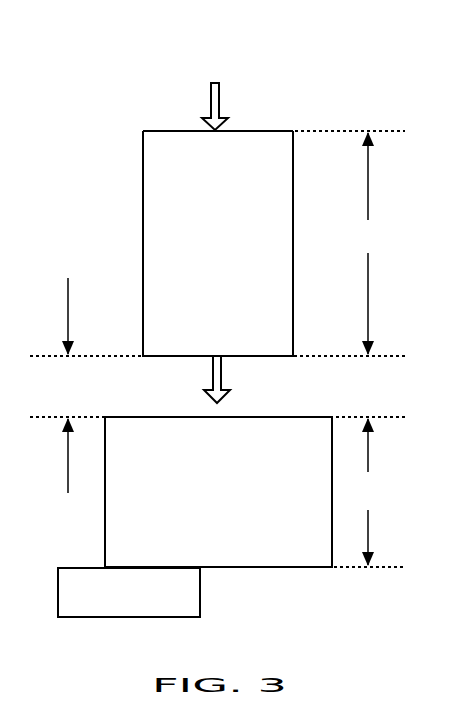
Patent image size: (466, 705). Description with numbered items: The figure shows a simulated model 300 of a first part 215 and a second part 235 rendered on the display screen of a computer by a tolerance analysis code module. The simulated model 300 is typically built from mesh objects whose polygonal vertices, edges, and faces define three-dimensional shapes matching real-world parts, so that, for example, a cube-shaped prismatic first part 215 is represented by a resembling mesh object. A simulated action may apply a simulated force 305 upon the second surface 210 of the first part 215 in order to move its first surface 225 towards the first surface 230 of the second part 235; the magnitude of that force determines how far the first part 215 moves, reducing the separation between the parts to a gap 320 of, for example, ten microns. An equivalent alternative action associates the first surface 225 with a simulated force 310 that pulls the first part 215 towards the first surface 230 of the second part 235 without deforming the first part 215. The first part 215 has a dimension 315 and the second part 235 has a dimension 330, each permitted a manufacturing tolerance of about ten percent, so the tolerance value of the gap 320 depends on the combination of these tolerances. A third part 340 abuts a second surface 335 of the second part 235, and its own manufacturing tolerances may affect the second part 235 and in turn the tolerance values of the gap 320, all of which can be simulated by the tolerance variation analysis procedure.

The simulated model 300 is at (377, 66).
The simulated force 305 is at (221, 112).
The second surface of the first part 210 is at (264, 127).
The first part 215 is at (233, 245).
The first surface of the first part 225 is at (232, 361).
The simulated force 310 is at (212, 368).
The dimension 315 is at (217, 243).
The gap 320 is at (69, 385).
The first surface of the second part 230 is at (284, 414).
The second part 235 is at (234, 495).
The dimension 330 is at (217, 492).
The second surface of the second part 335 is at (246, 573).
The third part 340 is at (144, 603).